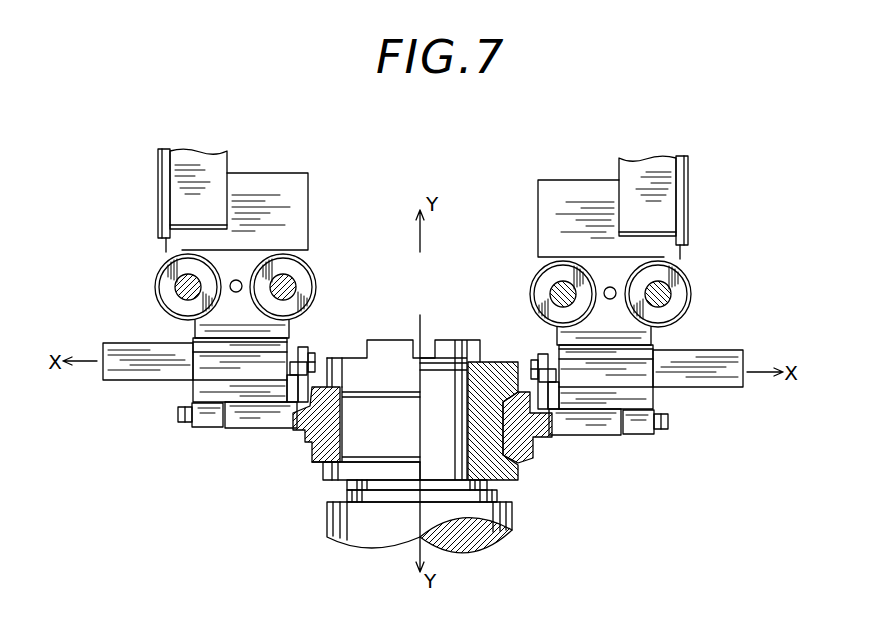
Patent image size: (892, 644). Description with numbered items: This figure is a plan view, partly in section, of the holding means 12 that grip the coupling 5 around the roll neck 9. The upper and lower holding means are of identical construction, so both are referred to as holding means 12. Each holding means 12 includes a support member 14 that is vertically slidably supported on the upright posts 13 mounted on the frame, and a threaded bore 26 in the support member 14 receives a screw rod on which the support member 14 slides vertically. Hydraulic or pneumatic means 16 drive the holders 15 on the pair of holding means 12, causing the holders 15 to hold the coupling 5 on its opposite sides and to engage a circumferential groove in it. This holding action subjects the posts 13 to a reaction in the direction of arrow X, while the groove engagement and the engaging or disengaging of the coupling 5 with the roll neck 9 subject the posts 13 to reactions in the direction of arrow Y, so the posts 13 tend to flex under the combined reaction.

The coupling 5 is at (495, 362).
The roll neck 9 is at (438, 380).
The holding means 12 is at (184, 401).
The upright posts 13 is at (177, 286).
The support member 14 is at (157, 309).
The holders 15 is at (310, 447).
The hydraulic or pneumatic means 16 is at (125, 375).
The threaded bore 26 is at (240, 281).